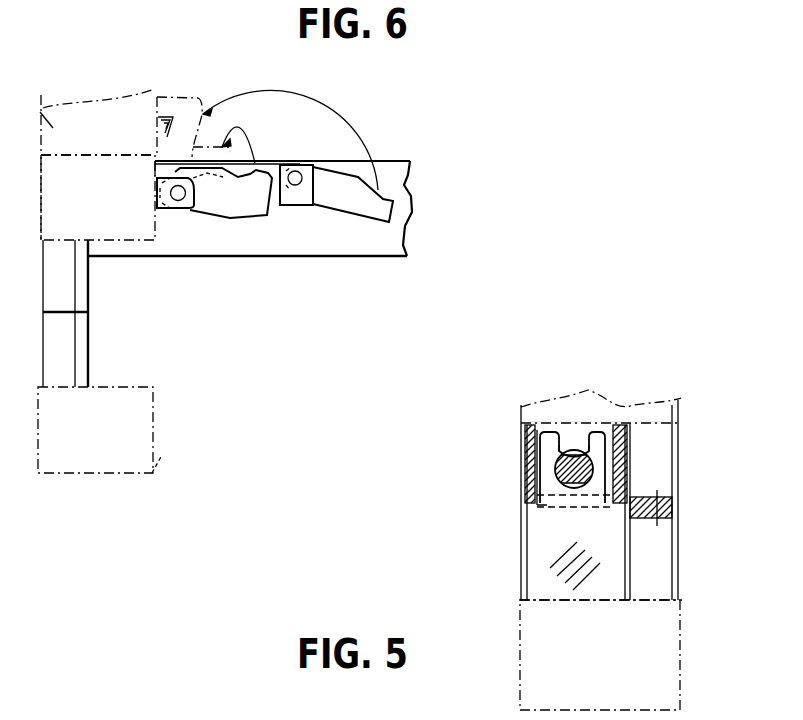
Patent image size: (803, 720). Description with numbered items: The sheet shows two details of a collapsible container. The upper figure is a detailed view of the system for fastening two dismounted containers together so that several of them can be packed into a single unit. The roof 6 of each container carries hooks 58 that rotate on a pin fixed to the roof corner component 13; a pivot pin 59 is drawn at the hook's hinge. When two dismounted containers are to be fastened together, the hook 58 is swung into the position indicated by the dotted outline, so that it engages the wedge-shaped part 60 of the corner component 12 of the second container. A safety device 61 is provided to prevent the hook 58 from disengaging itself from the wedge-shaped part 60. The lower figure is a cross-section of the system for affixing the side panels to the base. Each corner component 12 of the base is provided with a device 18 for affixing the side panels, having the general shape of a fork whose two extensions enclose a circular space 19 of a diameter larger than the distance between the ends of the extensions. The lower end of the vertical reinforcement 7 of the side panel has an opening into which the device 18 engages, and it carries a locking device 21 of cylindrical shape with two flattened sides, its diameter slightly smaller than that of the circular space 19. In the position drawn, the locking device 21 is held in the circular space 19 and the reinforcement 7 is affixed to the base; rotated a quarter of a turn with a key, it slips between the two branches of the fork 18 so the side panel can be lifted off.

In FIG. 6, the roof 6 is at (298, 240).
In FIG. 5, the vertical reinforcement 7 is at (600, 495).
In FIG. 6, the corner component 12 is at (42, 90).
In FIG. 5, the corner component 12 is at (600, 655).
In FIG. 6, the corner component 13 is at (98, 197).
In FIG. 5, the device for affixing the side panels 18 is at (548, 450).
In FIG. 5, the circular space 19 is at (594, 472).
In FIG. 5, the locking device 21 is at (573, 454).
In FIG. 6, the hook 58 is at (228, 203).
In FIG. 6, the pivot pin 59 is at (171, 200).
In FIG. 6, the wedge-shaped part 60 is at (153, 124).
In FIG. 6, the safety device 61 is at (367, 207).